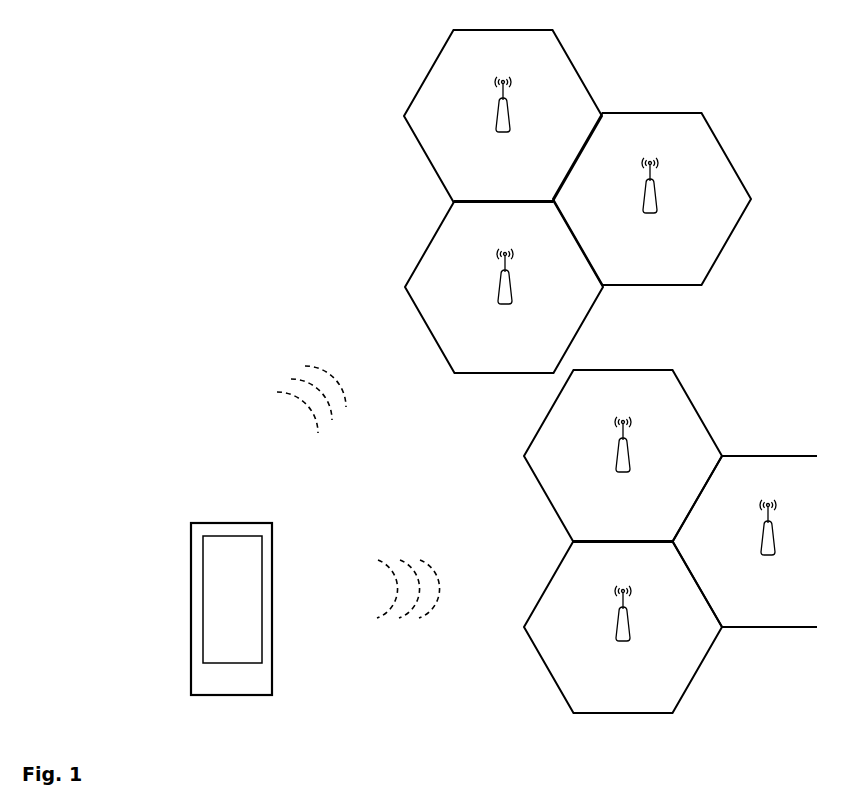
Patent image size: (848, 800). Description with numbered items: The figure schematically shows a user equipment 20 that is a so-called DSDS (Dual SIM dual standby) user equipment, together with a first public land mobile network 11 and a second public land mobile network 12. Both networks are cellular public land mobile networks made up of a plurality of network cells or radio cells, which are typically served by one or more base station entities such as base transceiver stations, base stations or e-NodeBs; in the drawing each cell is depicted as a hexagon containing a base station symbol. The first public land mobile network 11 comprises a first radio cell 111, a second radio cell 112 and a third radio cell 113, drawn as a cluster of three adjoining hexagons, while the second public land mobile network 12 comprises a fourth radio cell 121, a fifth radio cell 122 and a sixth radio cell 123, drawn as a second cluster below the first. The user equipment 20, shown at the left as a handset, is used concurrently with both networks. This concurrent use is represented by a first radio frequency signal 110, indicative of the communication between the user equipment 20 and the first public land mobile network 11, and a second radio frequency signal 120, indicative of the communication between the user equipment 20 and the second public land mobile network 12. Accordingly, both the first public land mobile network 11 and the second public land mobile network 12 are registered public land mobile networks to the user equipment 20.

The first public land mobile network 11 is at (668, 98).
The first radio cell 111 is at (503, 116).
The second radio cell 112 is at (652, 199).
The third radio cell 113 is at (504, 287).
The second public land mobile network 12 is at (778, 428).
The fourth radio cell 121 is at (623, 456).
The fifth radio cell 122 is at (745, 541).
The sixth radio cell 123 is at (623, 627).
The user equipment 20 is at (231, 599).
The first radio frequency signal 110 is at (294, 390).
The second radio frequency signal 120 is at (408, 578).